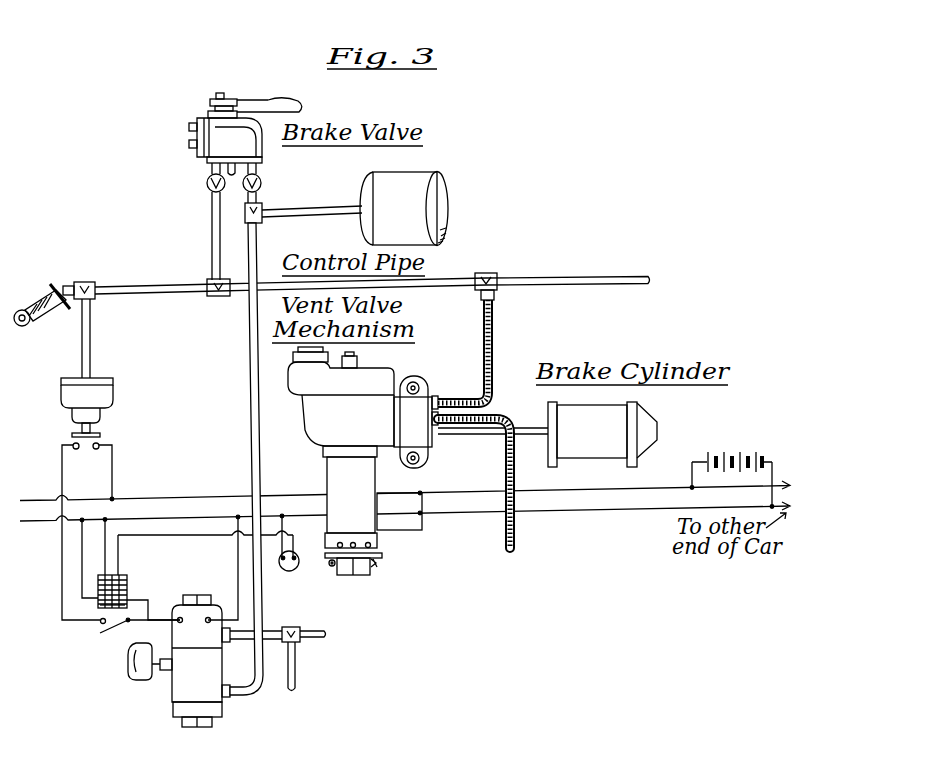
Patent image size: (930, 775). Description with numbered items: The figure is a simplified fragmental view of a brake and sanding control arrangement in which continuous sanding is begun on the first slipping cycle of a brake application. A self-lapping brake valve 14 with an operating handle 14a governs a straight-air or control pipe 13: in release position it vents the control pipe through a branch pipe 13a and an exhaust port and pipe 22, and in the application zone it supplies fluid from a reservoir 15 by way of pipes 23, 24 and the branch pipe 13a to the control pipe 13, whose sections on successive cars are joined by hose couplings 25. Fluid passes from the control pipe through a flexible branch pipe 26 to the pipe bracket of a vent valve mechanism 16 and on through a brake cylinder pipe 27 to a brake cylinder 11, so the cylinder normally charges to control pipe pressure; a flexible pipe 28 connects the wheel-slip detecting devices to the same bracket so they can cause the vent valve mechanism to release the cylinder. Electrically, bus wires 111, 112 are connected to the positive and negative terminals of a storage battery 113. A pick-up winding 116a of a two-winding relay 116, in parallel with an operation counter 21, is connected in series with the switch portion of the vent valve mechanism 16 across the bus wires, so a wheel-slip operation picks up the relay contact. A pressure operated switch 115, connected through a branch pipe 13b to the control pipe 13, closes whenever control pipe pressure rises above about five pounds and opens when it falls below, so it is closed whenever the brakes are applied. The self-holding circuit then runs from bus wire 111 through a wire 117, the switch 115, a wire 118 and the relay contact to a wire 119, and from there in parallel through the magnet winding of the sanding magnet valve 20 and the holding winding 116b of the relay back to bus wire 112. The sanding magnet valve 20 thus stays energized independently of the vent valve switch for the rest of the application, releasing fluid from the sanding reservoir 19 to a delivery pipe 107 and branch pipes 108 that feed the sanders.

The brake cylinder 11 is at (656, 413).
The control pipe 13 is at (598, 280).
The branch pipe 13a is at (212, 243).
The branch pipe 13b is at (91, 340).
The brake valve 14 is at (196, 106).
The operating handle 14a is at (277, 107).
The reservoir 15 is at (426, 191).
The vent valve mechanism 16 is at (394, 367).
The sanding reservoir 19 is at (146, 689).
The sanding magnet valve 20 is at (220, 602).
The operation counter 21 is at (291, 576).
The exhaust port and pipe 22 is at (210, 168).
The pipe 23 is at (300, 212).
The pipe 24 is at (249, 370).
The hose couplings 25 is at (42, 317).
The flexible branch pipe 26 is at (495, 338).
The brake cylinder pipe 27 is at (453, 437).
The flexible pipe 28 is at (505, 543).
The delivery pipe 107 is at (274, 633).
The branch pipes 108 is at (296, 660).
The bus wire 111 is at (231, 494).
The bus wire 112 is at (178, 519).
The storage battery 113 is at (718, 455).
The pressure operated switch 115 is at (121, 384).
The relay 116 is at (132, 577).
The pick-up winding 116a is at (128, 588).
The holding winding 116b is at (100, 605).
The wire 117 is at (113, 464).
The wire 118 is at (62, 462).
The wire 119 is at (167, 621).